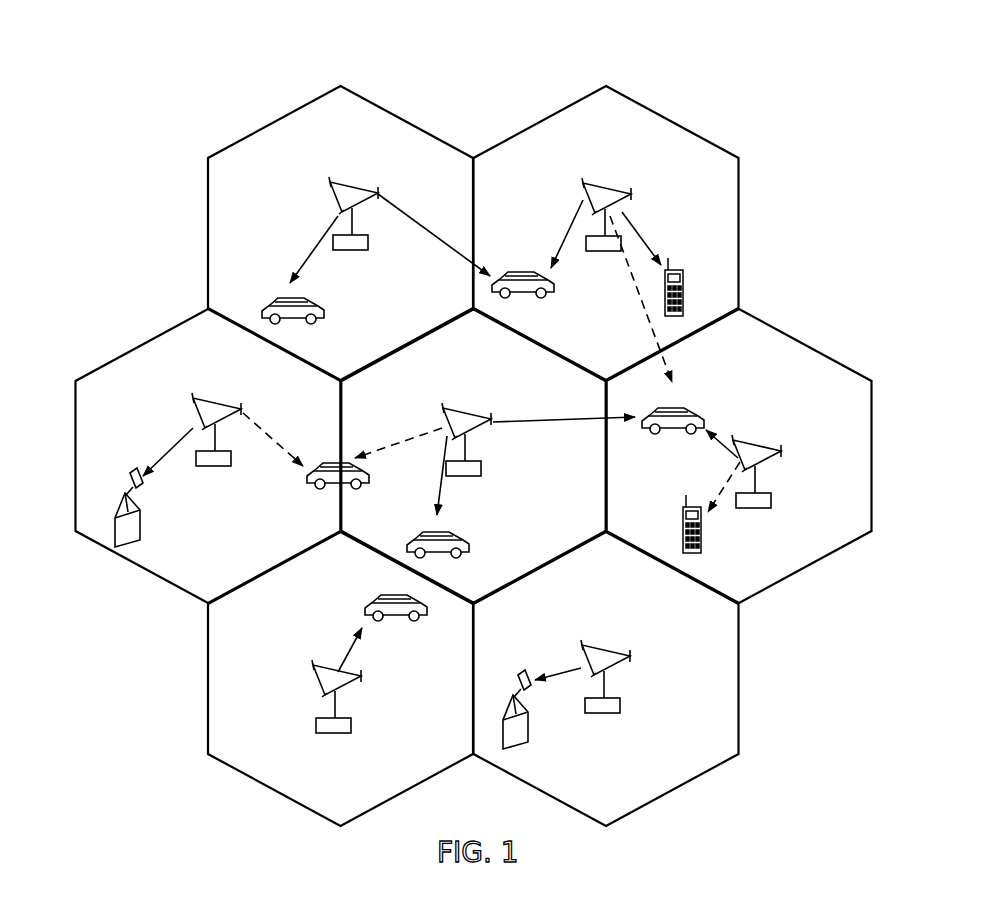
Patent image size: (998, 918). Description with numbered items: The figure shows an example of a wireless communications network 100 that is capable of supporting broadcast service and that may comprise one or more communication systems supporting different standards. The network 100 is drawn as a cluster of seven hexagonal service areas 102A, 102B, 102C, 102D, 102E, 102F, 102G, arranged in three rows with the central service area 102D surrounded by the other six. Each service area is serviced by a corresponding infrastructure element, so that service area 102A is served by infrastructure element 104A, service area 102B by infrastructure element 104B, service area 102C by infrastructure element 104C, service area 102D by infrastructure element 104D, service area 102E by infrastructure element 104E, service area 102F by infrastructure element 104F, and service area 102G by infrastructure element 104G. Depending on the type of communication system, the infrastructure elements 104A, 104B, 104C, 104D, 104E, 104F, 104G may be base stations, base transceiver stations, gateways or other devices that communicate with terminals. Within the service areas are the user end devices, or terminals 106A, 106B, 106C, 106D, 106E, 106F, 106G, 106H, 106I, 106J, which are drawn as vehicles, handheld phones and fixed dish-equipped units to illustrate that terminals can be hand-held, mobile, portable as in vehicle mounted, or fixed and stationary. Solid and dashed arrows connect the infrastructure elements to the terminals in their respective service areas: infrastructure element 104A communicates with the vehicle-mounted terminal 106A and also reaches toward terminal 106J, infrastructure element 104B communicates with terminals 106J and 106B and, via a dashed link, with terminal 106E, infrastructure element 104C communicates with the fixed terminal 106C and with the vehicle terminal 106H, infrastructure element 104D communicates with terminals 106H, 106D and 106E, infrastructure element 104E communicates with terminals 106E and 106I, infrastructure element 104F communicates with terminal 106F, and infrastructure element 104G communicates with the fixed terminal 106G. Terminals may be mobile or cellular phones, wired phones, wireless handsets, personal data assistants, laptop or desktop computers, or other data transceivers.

The wireless communications network 100 is at (800, 75).
The service area 102A is at (284, 118).
The service area 102B is at (670, 120).
The service area 102C is at (136, 346).
The service area 102D is at (510, 350).
The service area 102E is at (873, 457).
The service area 102F is at (208, 686).
The service area 102G is at (741, 658).
The infrastructure element 104A is at (339, 182).
The infrastructure element 104B is at (592, 183).
The infrastructure element 104C is at (203, 400).
The infrastructure element 104D is at (452, 410).
The infrastructure element 104E is at (742, 441).
The infrastructure element 104F is at (316, 669).
The infrastructure element 104G is at (590, 648).
The terminal 106A is at (288, 299).
The terminal 106B is at (672, 268).
The terminal 106C is at (129, 481).
The terminal 106D is at (438, 531).
The terminal 106E is at (678, 406).
The terminal 106F is at (388, 596).
The terminal 106G is at (516, 681).
The terminal 106H is at (327, 462).
The terminal 106I is at (686, 506).
The terminal 106J is at (531, 271).